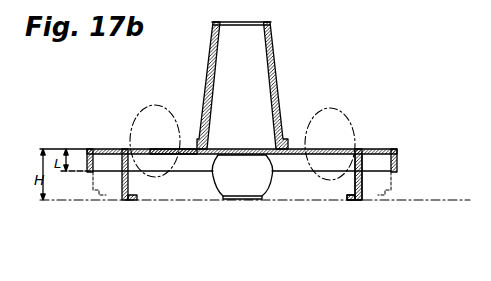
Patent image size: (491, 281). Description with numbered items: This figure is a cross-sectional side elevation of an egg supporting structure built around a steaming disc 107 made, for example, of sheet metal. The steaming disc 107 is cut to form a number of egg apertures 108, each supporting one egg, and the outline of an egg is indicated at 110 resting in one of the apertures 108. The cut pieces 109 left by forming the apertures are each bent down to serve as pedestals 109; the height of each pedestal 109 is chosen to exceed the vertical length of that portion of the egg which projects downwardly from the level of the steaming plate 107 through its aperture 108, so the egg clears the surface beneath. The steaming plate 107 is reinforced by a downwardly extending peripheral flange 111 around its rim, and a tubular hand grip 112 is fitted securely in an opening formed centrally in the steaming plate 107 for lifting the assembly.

The steaming disc 107 is at (112, 149).
The egg aperture 108 is at (168, 149).
The pedestal 109 is at (129, 184).
The contact zone 110 is at (155, 125).
The peripheral flange 111 is at (87, 150).
The tubular hand grip 112 is at (210, 48).